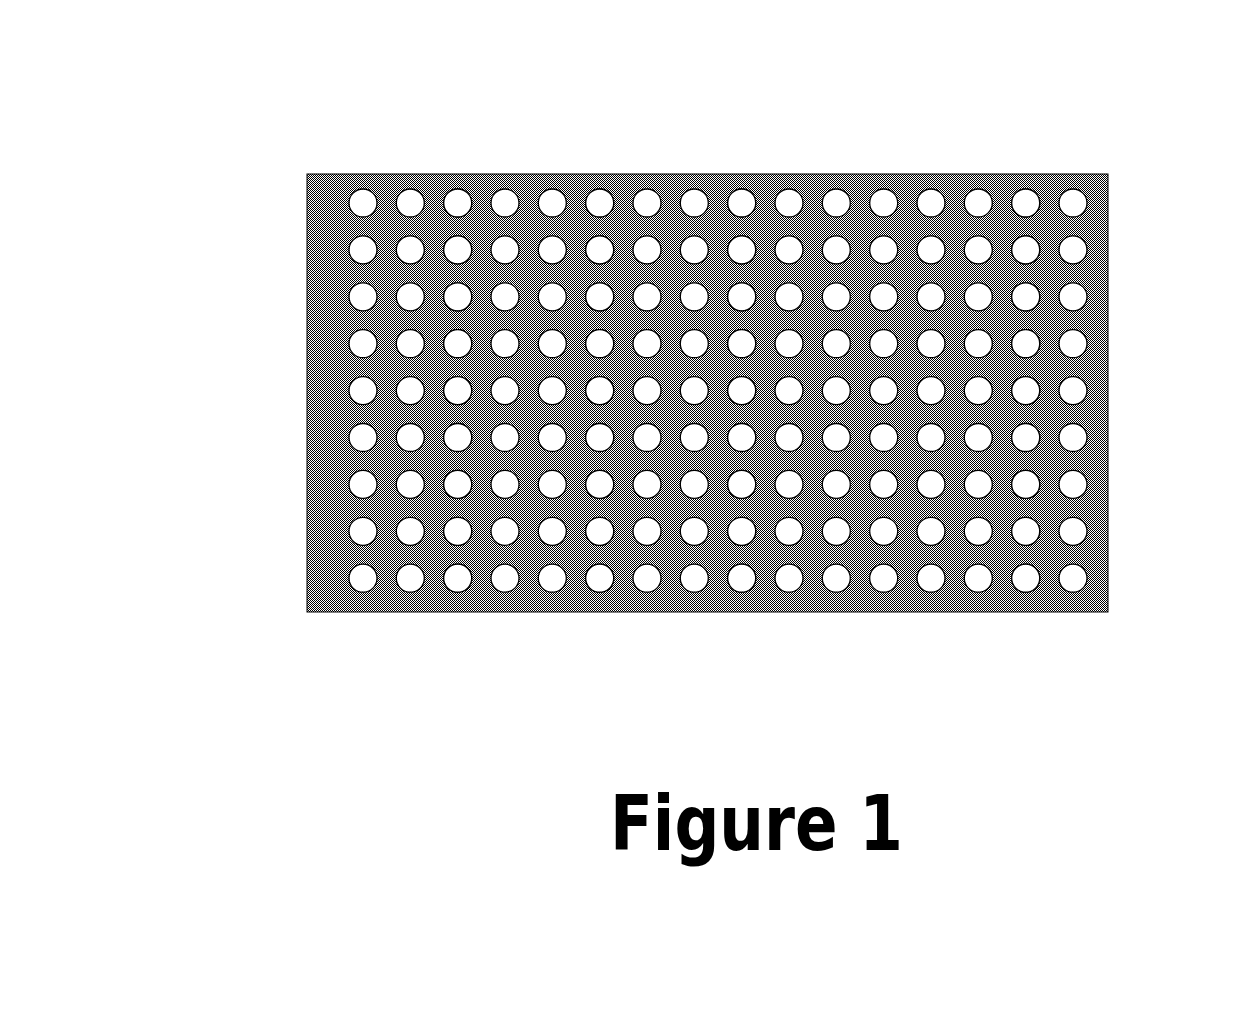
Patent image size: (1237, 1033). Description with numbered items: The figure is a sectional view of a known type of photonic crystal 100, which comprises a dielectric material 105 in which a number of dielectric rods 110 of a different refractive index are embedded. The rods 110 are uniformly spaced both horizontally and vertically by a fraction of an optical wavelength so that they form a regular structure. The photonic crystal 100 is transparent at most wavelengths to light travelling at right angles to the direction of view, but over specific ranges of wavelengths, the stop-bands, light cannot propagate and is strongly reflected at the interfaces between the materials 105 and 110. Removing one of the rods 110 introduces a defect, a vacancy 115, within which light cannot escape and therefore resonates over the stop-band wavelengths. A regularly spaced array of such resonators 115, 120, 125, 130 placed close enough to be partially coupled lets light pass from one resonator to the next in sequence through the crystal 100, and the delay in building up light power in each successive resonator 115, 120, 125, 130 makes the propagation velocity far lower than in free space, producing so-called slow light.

The photonic crystal 100 is at (675, 380).
The dielectric material 105 is at (330, 468).
The dielectric rods 110 is at (362, 200).
The vacancy 115 is at (457, 395).
The resonator 120 is at (590, 397).
The resonator 125 is at (740, 397).
The resonator 130 is at (1022, 397).